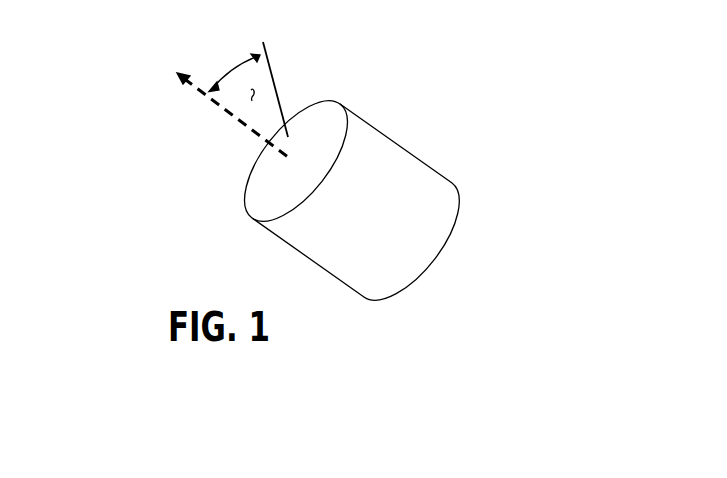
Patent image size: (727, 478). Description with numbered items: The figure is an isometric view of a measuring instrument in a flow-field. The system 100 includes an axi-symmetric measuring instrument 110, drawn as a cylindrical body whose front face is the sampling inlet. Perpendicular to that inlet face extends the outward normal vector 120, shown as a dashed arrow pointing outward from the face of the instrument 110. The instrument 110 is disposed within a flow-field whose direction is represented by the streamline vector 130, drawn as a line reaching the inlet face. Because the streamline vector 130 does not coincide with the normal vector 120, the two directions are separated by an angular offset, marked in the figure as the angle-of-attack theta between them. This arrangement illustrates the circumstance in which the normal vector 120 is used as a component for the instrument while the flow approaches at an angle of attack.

The system 100 is at (440, 38).
The axi-symmetric measuring instrument 110 is at (371, 128).
The outward normal vector n̂ 120 is at (205, 108).
The streamline vector v̂ 130 is at (278, 53).